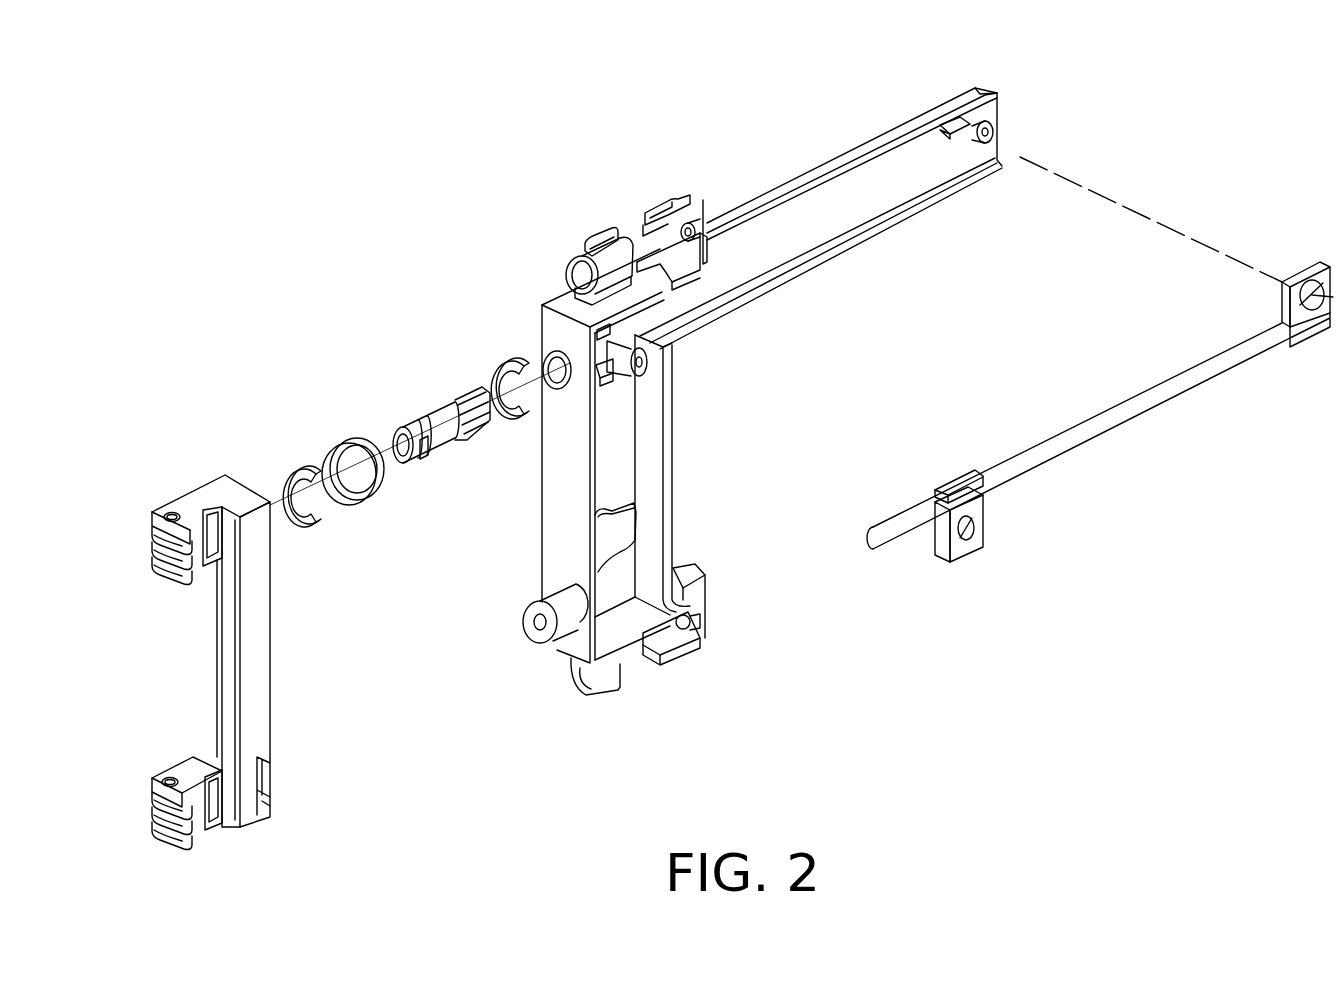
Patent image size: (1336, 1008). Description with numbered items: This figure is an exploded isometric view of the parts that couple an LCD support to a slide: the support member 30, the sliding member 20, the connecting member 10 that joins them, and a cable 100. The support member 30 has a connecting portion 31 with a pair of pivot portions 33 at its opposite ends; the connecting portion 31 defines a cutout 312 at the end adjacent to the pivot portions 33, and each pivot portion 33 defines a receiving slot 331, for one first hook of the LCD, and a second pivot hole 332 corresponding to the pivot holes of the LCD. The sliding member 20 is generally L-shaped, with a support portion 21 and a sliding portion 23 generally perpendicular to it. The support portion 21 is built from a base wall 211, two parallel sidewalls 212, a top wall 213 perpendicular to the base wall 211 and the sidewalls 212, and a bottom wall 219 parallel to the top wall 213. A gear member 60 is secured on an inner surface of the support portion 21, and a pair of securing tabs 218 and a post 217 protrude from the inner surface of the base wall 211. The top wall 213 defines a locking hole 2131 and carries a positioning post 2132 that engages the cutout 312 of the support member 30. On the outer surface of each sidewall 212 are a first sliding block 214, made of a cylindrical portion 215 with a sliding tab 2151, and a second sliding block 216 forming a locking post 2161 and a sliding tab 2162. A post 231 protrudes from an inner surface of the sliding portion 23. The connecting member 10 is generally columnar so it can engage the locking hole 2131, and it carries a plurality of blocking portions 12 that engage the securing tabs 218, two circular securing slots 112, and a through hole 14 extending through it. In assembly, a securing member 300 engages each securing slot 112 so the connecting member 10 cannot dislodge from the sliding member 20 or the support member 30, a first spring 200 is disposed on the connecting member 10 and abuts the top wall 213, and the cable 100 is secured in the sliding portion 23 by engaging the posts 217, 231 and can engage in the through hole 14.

The connecting member 10 is at (428, 376).
The blocking portions 12 is at (462, 392).
The through hole 14 is at (404, 456).
The securing slots 112 is at (415, 423).
The sliding member 20 is at (788, 298).
The support portion 21 is at (628, 468).
The sliding portion 23 is at (843, 213).
The support member 30 is at (300, 697).
The connecting portion 31 is at (264, 592).
The pivot portions 33 is at (205, 684).
The gear member 60 is at (612, 530).
The cable 100 is at (1143, 403).
The first spring 200 is at (347, 445).
The base wall 211 is at (615, 425).
The sidewalls 212 is at (623, 627).
The top wall 213 is at (566, 546).
The first sliding block 214 is at (588, 136).
The cylindrical portion 215 is at (583, 257).
The second sliding block 216 is at (702, 73).
The post 217 is at (645, 364).
The securing tabs 218 is at (614, 385).
The bottom wall 219 is at (648, 560).
The post 231 is at (997, 133).
The securing member 300 is at (284, 468).
The cutout 312 is at (265, 780).
The receiving slot 331 is at (210, 792).
The second pivot hole 332 is at (157, 775).
The locking hole 2131 is at (537, 348).
The positioning post 2132 is at (553, 648).
The sliding tab 2151 is at (596, 236).
The locking post 2161 is at (712, 218).
The sliding tab 2162 is at (662, 207).